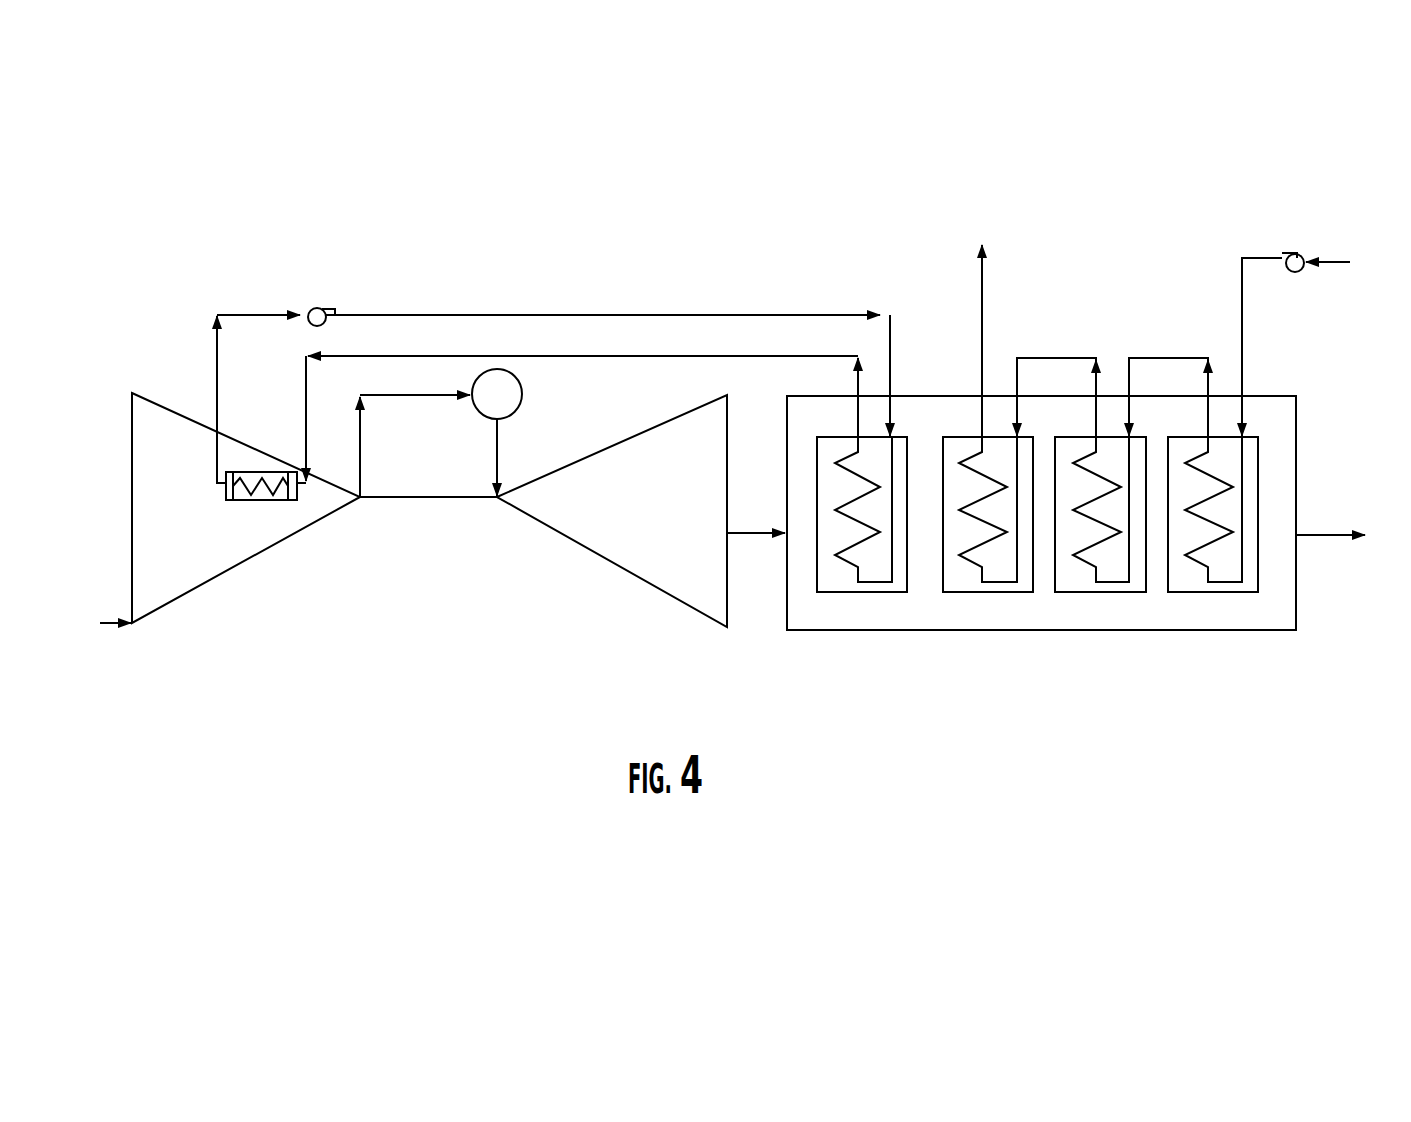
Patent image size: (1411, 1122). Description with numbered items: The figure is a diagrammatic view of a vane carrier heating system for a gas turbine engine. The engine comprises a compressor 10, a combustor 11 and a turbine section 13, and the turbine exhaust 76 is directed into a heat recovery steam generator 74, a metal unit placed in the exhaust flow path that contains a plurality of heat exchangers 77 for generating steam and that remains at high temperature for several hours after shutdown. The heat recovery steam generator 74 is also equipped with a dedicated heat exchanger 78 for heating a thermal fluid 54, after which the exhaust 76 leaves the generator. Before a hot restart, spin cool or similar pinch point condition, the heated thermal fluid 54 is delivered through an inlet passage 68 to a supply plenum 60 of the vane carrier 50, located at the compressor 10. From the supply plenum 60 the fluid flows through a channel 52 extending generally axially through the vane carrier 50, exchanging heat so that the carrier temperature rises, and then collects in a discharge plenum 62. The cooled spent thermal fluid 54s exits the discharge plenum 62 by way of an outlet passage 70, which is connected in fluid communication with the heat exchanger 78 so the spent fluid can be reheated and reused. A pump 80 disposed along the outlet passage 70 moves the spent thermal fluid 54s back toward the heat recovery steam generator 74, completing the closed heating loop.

The compressor 10 is at (162, 425).
The combustor 11 is at (510, 396).
The turbine section 13 is at (703, 603).
The vane carrier 50 is at (270, 578).
The channel 52 is at (270, 498).
The thermal fluid 54 is at (687, 357).
The spent thermal fluid 54s is at (215, 375).
The supply plenum 60 is at (297, 492).
The discharge plenum 62 is at (226, 492).
The inlet passage 68 is at (314, 390).
The outlet passage 70 is at (253, 326).
The heat recovery steam generator 74 is at (1300, 630).
The turbine exhaust 76 is at (747, 533).
The heat exchangers 77 is at (1199, 591).
The heat exchanger 78 is at (897, 593).
The pump 80 is at (318, 308).